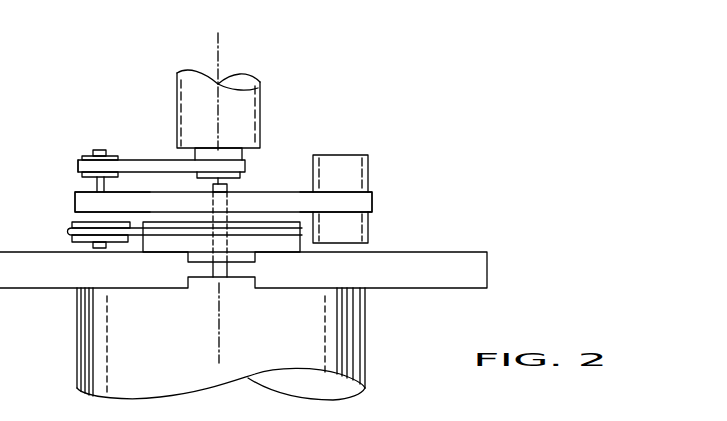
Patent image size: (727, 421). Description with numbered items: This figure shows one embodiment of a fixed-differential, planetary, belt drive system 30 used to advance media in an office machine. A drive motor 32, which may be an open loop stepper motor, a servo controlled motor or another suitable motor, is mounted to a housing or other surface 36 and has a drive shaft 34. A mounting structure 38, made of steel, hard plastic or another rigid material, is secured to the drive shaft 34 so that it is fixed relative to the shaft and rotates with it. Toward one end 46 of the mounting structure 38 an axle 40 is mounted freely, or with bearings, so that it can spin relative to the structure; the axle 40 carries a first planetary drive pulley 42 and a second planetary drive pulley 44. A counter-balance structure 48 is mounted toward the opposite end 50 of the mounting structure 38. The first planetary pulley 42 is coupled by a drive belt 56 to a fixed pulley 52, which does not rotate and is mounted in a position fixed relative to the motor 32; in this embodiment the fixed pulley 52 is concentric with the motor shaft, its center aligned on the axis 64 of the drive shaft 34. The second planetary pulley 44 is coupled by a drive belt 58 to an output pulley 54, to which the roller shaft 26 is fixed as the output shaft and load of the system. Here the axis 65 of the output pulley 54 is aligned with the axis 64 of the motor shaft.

The roller shaft 26 is at (259, 103).
The fixed-differential, planetary, belt drive system 30 is at (492, 112).
The drive motor 32 is at (367, 340).
The drive shaft 34 is at (227, 263).
The housing or other surface 36 is at (470, 252).
The mounting structure 38 is at (275, 192).
The axle 40 is at (92, 185).
The first planetary drive pulley 42 is at (70, 224).
The second planetary drive pulley 44 is at (96, 150).
The one end 46 is at (75, 200).
The counter-balance structure 48 is at (370, 168).
The opposite end 50 is at (372, 202).
The fixed pulley 52 is at (278, 246).
The output pulley 54 is at (200, 177).
The drive belt 56 is at (62, 232).
The drive belt 58 is at (80, 163).
The axis of the motor shaft 64 is at (219, 350).
The axis of the output pulley 65 is at (220, 48).